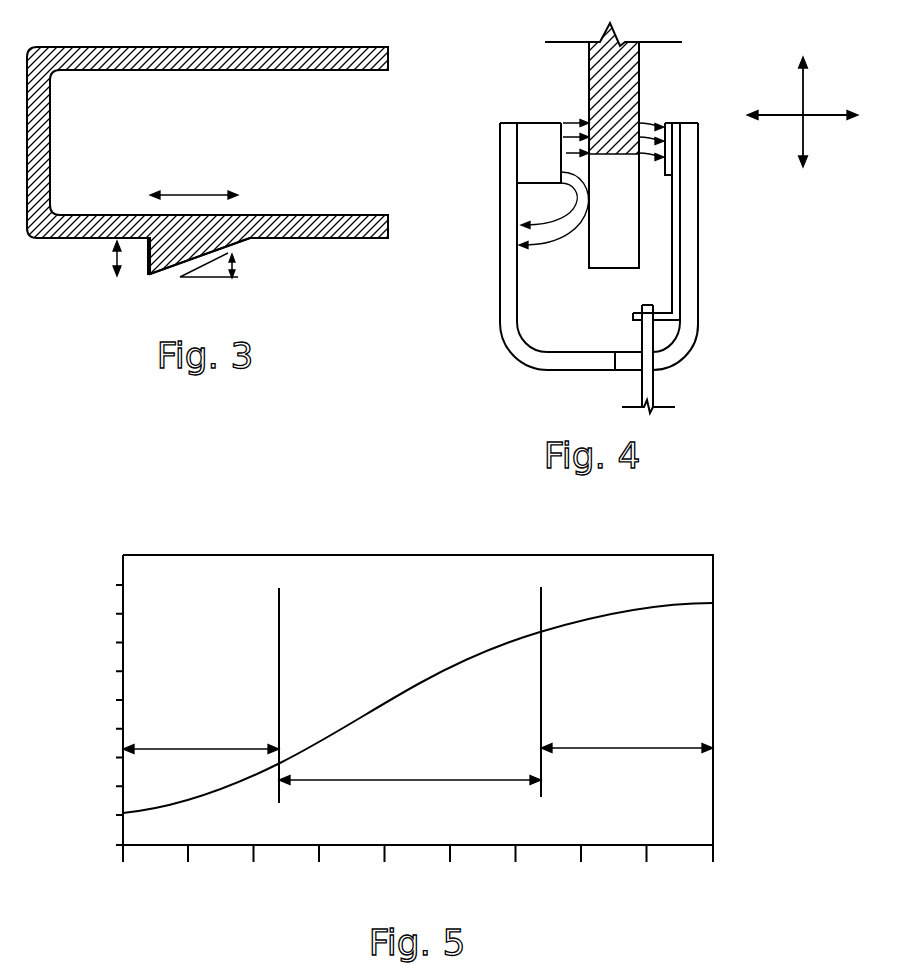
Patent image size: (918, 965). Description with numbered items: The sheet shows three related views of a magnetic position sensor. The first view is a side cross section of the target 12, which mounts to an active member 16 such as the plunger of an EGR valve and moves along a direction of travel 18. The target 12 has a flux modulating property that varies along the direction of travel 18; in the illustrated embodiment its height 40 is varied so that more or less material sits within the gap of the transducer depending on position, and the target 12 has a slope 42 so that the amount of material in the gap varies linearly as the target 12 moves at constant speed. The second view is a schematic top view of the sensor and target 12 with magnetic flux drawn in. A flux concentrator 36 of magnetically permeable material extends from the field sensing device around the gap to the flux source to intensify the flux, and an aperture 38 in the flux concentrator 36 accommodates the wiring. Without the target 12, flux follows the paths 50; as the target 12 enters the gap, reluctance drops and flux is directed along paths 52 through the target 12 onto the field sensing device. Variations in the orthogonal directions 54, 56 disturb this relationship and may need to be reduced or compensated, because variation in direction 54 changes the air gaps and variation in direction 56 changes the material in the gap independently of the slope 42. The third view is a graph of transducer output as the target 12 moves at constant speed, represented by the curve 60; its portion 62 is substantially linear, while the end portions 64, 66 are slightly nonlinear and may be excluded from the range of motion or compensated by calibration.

In FIG. 3, the target 12 is at (148, 273).
In FIG. 3, the active member 16 is at (215, 47).
In FIG. 3, the direction of travel 18 is at (190, 194).
In FIG. 3, the height 40 is at (110, 258).
In FIG. 3, the slope 42 is at (238, 262).
In FIG. 4, the flux concentrator 36 is at (500, 312).
In FIG. 4, the aperture 38 is at (700, 311).
In FIG. 4, the paths 50 is at (545, 240).
In FIG. 4, the paths 52 is at (581, 122).
In FIG. 4, the direction 54 is at (820, 116).
In FIG. 4, the direction 56 is at (806, 90).
In FIG. 5, the curve 60 is at (420, 682).
In FIG. 5, the portion 62 is at (413, 778).
In FIG. 5, the end portion 64 is at (190, 748).
In FIG. 5, the end portion 66 is at (623, 748).